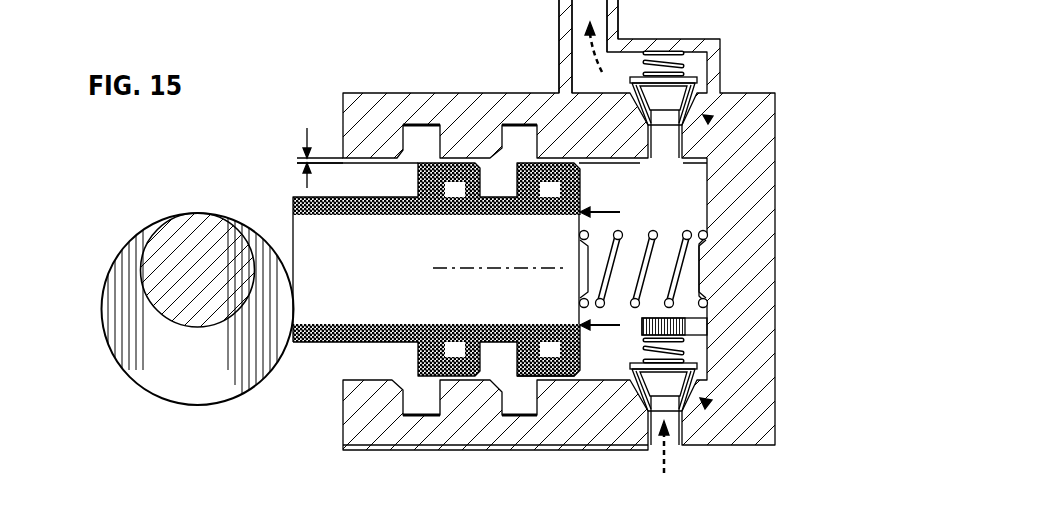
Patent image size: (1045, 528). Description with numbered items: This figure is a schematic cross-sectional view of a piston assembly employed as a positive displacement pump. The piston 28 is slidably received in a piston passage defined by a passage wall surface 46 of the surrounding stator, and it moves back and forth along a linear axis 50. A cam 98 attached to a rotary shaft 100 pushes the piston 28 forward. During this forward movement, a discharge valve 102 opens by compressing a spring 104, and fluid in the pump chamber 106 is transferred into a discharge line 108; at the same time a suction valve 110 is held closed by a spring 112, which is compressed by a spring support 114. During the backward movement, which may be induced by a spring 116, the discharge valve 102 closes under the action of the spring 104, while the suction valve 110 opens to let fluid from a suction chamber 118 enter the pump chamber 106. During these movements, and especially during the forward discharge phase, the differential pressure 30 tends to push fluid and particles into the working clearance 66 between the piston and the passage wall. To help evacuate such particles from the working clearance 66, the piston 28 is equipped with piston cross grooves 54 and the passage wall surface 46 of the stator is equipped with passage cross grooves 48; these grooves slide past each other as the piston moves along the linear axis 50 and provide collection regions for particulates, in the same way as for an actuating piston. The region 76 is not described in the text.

The piston 28 is at (377, 280).
The actuating fluid / differential pressure 30 is at (610, 212).
The passage wall surface 46 is at (365, 378).
The passage cross grooves 48 is at (505, 123).
The linear axis 50 is at (490, 268).
The piston cross grooves 54 is at (501, 330).
The working clearance 66 is at (356, 144).
The clearance region 76 is at (256, 159).
The cam 98 is at (210, 370).
The rotary shaft 100 is at (216, 281).
The discharge valve 102 is at (706, 117).
The spring 104 is at (684, 66).
The pump chamber 106 is at (692, 197).
The discharge line 108 is at (558, 38).
The suction valve 110 is at (706, 403).
The spring 112 is at (682, 352).
The spring support 114 is at (700, 328).
The spring 116 is at (683, 258).
The suction chamber 118 is at (647, 428).